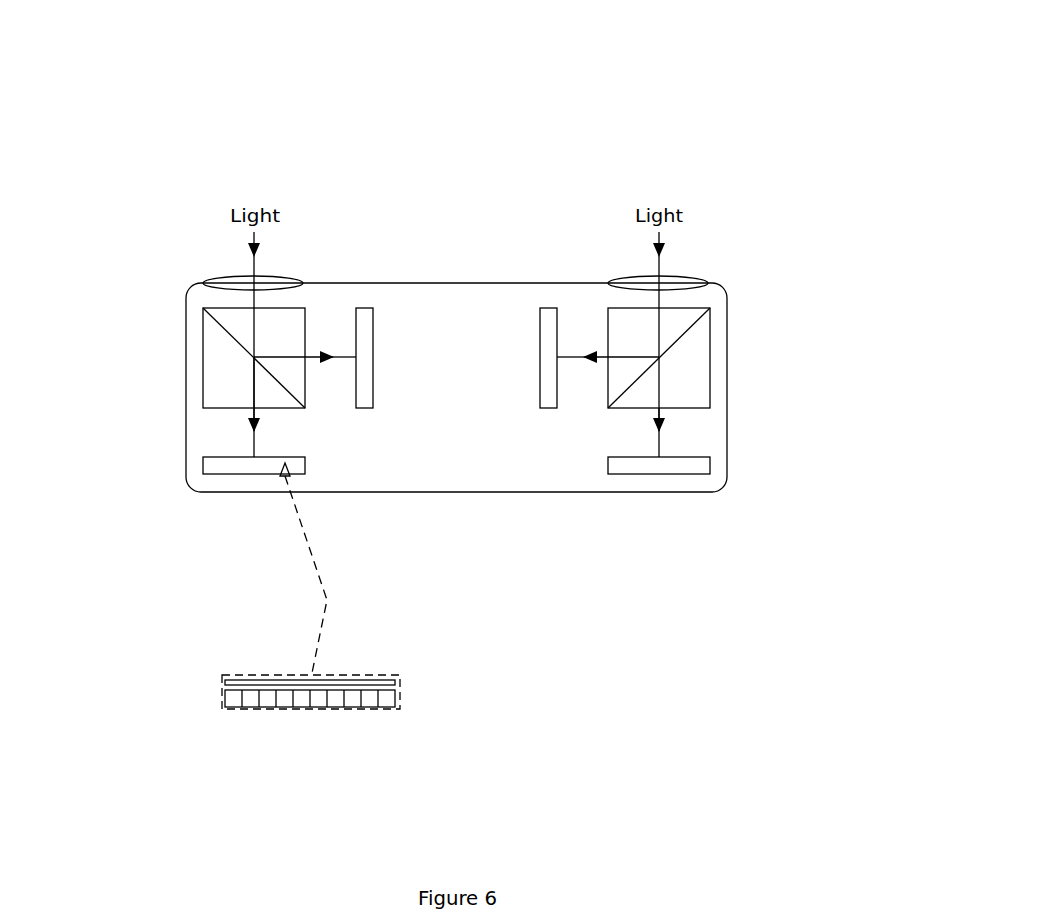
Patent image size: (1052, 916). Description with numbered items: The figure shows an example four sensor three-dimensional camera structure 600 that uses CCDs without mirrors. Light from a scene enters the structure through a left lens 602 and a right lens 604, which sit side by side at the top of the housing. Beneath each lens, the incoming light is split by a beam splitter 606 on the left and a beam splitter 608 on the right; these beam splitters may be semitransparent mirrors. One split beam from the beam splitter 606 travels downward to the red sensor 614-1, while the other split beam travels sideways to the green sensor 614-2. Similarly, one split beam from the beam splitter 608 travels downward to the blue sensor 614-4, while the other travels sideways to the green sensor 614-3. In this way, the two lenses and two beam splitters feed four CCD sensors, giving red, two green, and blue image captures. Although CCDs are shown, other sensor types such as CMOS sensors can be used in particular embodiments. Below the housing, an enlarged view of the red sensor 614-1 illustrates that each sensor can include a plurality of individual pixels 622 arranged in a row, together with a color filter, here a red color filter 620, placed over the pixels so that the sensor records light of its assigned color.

The four sensor 3-D camera structure 600 is at (175, 40).
The left lens 602 is at (292, 278).
The right lens 604 is at (619, 278).
The beam splitter 606 is at (220, 368).
The beam splitter 608 is at (685, 376).
The red sensor 614-1 is at (262, 467).
The green sensor 614-2 is at (368, 402).
The green sensor 614-3 is at (552, 402).
The blue sensor 614-4 is at (647, 470).
The red color filter 620 is at (390, 683).
The individual pixels 622 is at (355, 698).